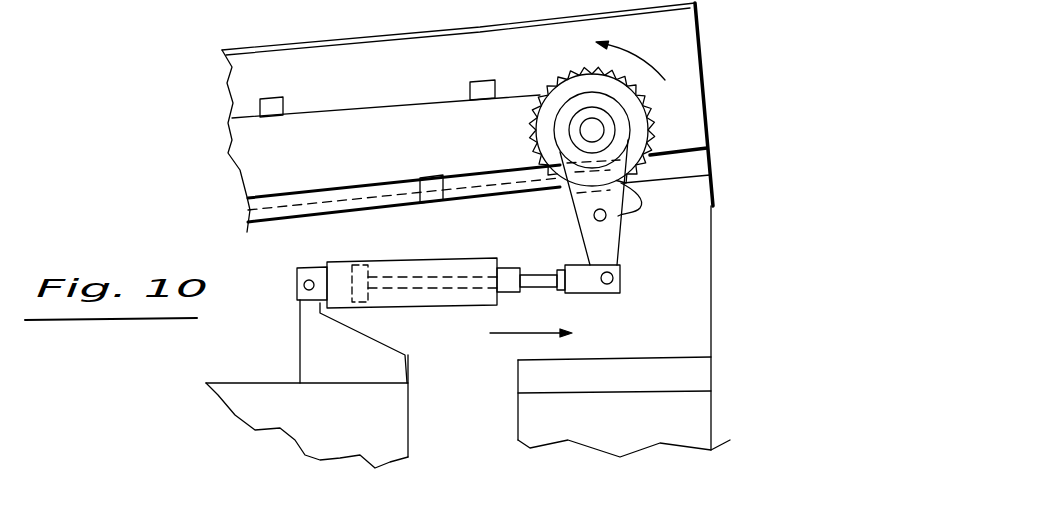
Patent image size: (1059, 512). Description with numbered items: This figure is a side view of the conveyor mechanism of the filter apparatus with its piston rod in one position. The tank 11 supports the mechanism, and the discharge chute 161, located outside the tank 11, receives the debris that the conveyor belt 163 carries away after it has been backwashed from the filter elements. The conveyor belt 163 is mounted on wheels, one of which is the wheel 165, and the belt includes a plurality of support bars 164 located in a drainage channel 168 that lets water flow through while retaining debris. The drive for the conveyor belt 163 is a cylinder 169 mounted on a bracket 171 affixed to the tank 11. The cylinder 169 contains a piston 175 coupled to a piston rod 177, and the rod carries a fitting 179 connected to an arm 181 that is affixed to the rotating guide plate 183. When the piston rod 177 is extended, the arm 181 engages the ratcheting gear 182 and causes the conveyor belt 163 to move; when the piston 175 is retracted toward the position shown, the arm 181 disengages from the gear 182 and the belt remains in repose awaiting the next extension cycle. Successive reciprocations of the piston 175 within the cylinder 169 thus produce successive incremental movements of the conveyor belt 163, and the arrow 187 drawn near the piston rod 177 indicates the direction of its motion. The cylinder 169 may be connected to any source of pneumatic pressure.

The tank 11 is at (328, 433).
The discharge chute 161 is at (705, 418).
The conveyor belt 163 is at (367, 105).
The support bars 164 is at (281, 98).
The wheel 165 is at (628, 113).
The drainage channel 168 is at (355, 202).
The cylinder 169 is at (340, 265).
The bracket 171 is at (308, 355).
The piston 175 is at (372, 263).
The piston rod 177 is at (533, 292).
The fitting 179 is at (588, 300).
The arm 181 is at (637, 208).
The ratcheting gear 182 is at (558, 80).
The rotating guide plate 183 is at (623, 131).
The direction arrow 187 is at (503, 343).